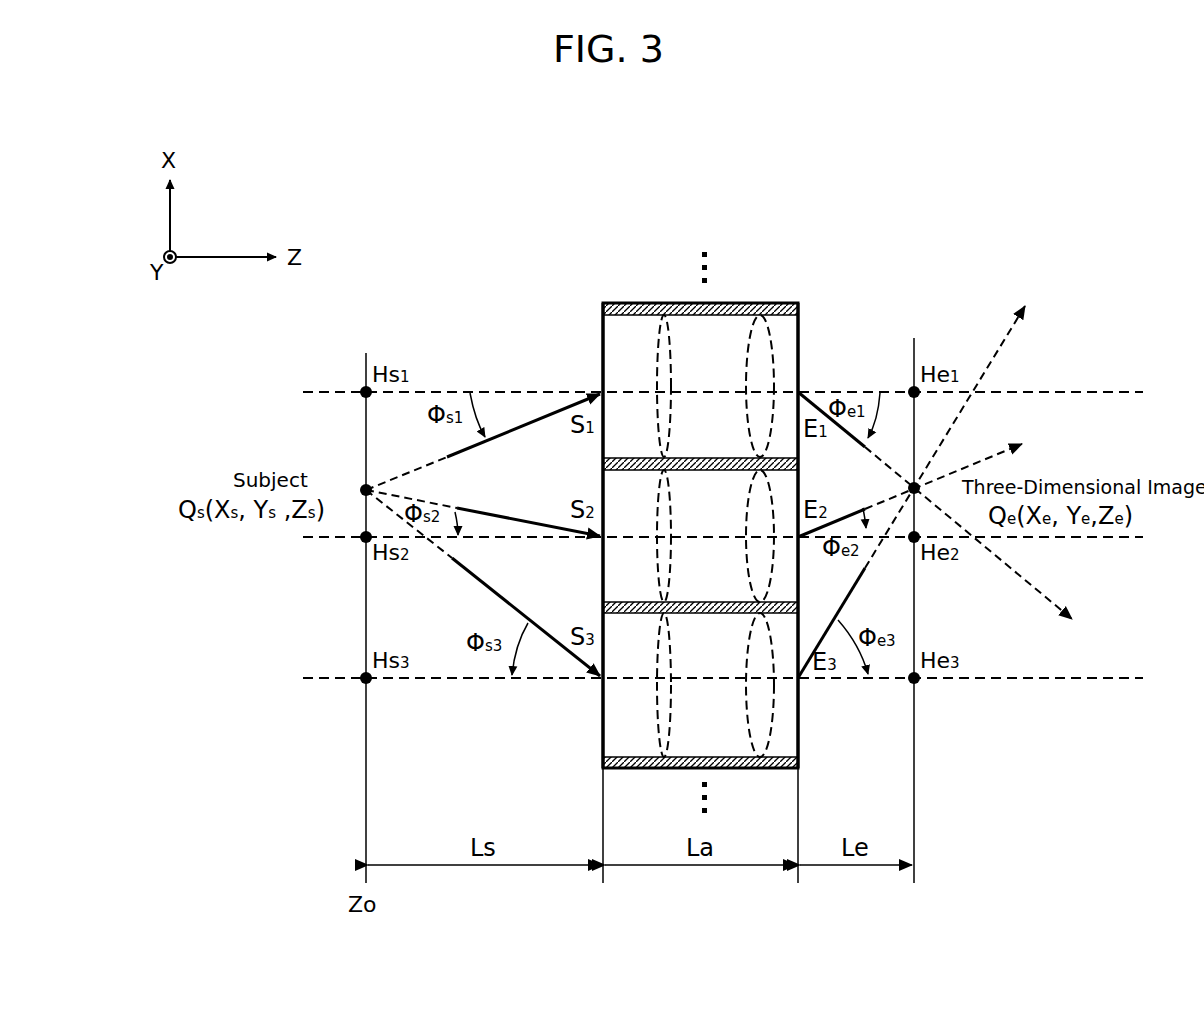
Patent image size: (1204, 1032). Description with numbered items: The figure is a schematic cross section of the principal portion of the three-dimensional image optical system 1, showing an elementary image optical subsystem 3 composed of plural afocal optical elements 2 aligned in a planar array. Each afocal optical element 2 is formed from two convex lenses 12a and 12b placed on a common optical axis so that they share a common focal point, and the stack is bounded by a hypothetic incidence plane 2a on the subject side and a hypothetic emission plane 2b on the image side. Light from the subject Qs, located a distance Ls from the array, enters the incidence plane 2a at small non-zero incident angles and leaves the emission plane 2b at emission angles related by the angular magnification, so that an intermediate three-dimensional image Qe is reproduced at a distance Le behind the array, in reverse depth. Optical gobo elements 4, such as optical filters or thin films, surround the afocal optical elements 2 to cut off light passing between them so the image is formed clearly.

The three-dimensional image optical system 1 is at (644, 268).
The afocal optical element 2 is at (720, 338).
The hypothetic incidence plane 2a is at (600, 328).
The hypothetic emission plane 2b is at (800, 335).
The elementary image optical subsystem 3 is at (814, 368).
The optical gobo element 4 is at (625, 457).
The convex lens 12a is at (658, 338).
The convex lens 12b is at (773, 340).